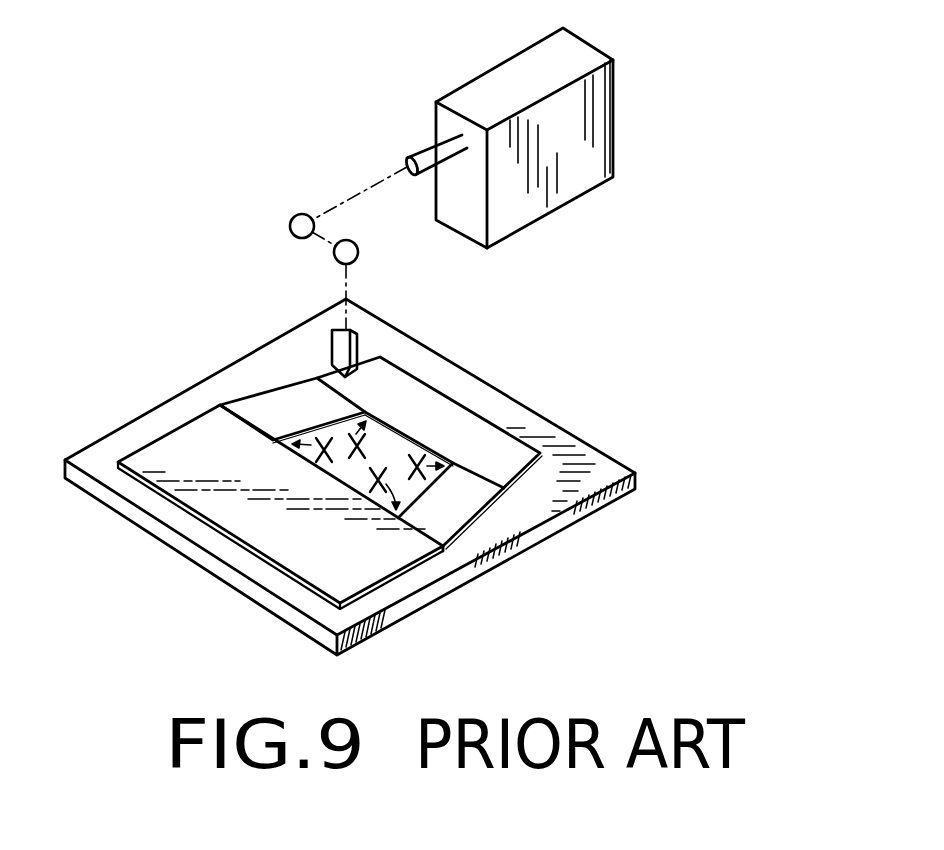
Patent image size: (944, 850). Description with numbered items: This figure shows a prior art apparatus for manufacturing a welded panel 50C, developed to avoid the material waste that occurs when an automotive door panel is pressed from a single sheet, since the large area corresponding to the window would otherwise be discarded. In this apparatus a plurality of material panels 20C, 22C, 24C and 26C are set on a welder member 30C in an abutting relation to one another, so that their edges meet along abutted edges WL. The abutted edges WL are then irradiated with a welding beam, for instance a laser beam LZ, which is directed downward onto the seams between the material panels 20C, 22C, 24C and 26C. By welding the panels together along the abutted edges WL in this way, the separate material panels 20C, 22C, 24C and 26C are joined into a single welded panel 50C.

The material panel 20C is at (448, 415).
The material panel 22C is at (457, 505).
The material panel 24C is at (287, 543).
The material panel 26C is at (270, 393).
The welder member 30C is at (590, 465).
The welded panel 50C is at (190, 510).
The abutted edges WL is at (245, 417).
The laser beam LZ is at (363, 187).